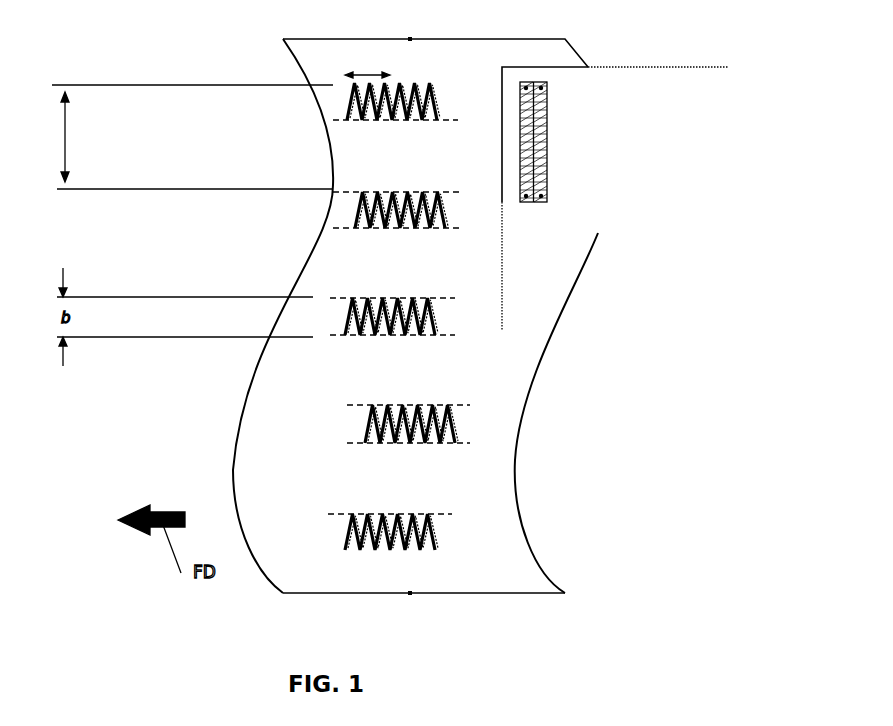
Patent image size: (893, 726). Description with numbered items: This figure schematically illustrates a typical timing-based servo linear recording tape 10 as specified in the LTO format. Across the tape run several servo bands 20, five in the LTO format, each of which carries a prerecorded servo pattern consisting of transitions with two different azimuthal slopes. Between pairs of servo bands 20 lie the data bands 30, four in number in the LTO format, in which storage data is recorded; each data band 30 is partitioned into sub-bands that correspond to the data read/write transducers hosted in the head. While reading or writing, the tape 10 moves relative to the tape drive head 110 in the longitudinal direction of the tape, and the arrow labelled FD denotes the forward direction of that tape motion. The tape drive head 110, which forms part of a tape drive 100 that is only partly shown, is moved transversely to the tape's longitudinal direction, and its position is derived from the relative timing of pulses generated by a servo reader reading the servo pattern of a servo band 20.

The linear recording tape 10 is at (500, 573).
The servo band 20 is at (333, 97).
The data band 30 is at (403, 160).
The tape drive 100 is at (627, 127).
The tape drive head 110 is at (545, 156).